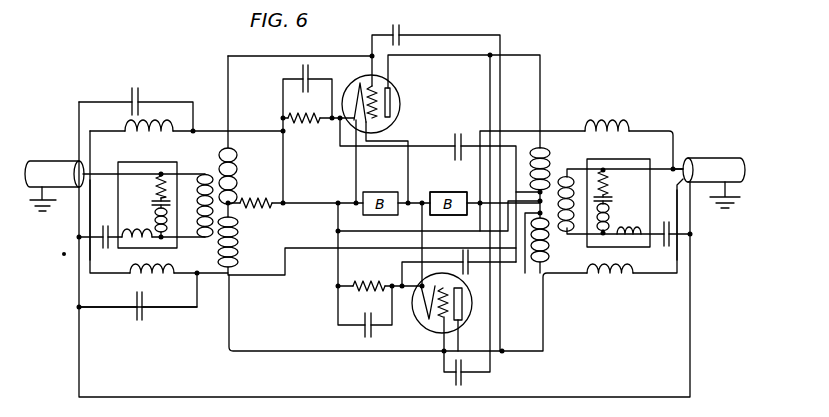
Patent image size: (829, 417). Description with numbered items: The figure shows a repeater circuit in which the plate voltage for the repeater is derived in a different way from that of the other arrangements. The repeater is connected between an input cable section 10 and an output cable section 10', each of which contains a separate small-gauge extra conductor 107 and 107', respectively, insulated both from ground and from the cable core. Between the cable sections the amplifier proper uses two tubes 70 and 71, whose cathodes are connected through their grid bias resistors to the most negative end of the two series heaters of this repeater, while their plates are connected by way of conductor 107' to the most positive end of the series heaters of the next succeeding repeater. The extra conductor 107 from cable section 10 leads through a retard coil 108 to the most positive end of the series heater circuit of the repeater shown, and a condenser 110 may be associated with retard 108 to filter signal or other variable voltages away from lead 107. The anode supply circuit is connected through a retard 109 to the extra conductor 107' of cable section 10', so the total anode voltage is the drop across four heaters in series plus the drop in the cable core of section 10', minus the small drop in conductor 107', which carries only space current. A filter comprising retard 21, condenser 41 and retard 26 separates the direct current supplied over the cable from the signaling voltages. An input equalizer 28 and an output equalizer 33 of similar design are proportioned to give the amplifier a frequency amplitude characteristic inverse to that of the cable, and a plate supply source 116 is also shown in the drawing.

The cable section 10 is at (54, 174).
The condenser 41 is at (138, 96).
The retard coil 21 is at (128, 131).
The equalizer 28 is at (121, 163).
The extra conductor 107 is at (62, 222).
The retard coil 108 is at (130, 281).
The condenser 110 is at (139, 322).
The tube 70 is at (399, 106).
The battery 116 is at (470, 193).
The tube 71 is at (424, 327).
The retard coil 26 is at (607, 122).
The equalizer 33 is at (649, 205).
The cable section 10' is at (714, 171).
The extra conductor 107' is at (706, 225).
The retard coil 109 is at (621, 281).